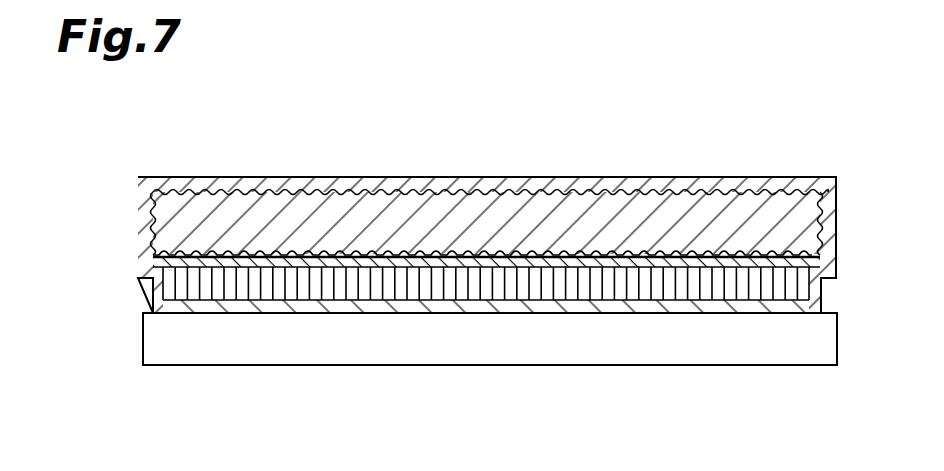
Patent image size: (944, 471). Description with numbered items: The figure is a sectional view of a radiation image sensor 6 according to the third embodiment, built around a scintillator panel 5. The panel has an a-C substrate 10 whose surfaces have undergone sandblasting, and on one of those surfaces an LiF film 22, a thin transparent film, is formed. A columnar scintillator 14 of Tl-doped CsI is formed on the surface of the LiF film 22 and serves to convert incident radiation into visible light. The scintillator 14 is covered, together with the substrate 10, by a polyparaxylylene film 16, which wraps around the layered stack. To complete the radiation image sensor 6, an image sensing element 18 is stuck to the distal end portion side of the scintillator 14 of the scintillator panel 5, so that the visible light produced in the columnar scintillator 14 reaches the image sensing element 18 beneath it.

The radiation image sensor 6 is at (487, 248).
The scintillator panel 5 is at (529, 177).
The a-C substrate 10 is at (710, 198).
The LiF film 22 is at (372, 255).
The columnar scintillator 14 is at (753, 292).
The polyparaxylylene film 16 is at (590, 305).
The image sensing element 18 is at (473, 355).